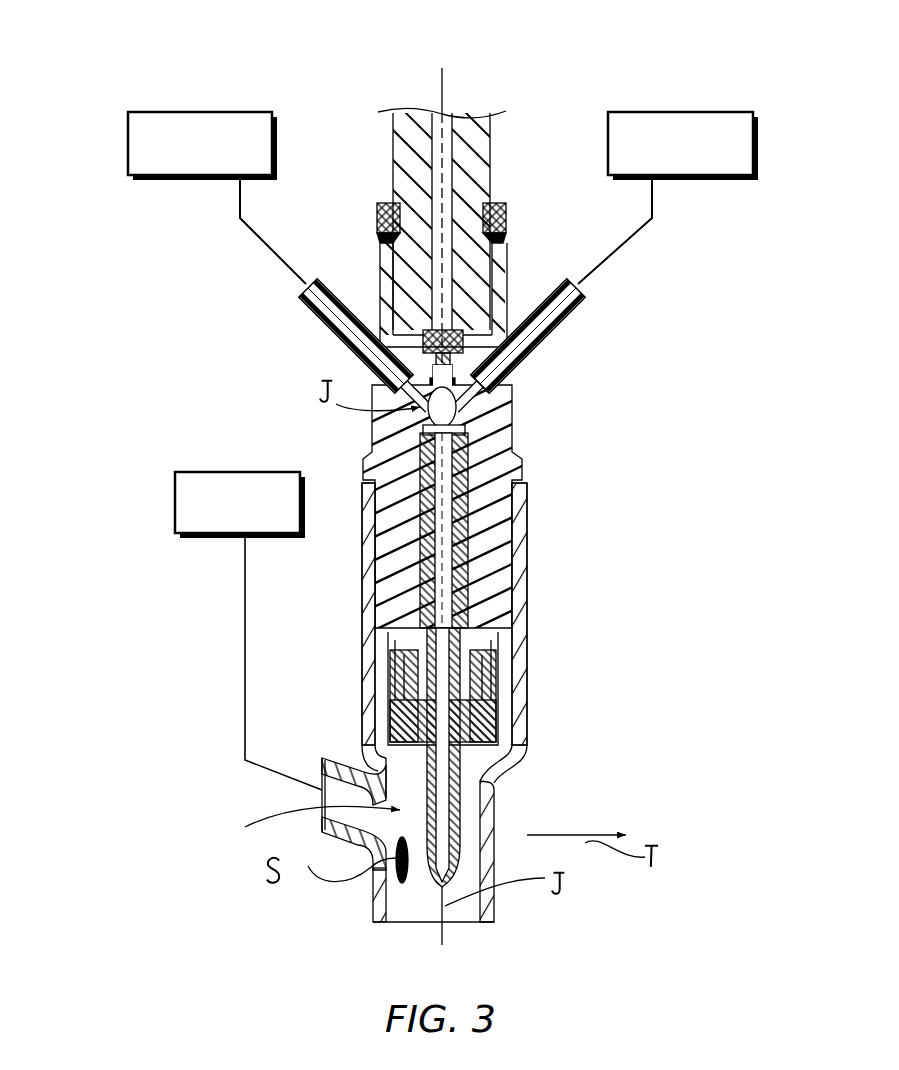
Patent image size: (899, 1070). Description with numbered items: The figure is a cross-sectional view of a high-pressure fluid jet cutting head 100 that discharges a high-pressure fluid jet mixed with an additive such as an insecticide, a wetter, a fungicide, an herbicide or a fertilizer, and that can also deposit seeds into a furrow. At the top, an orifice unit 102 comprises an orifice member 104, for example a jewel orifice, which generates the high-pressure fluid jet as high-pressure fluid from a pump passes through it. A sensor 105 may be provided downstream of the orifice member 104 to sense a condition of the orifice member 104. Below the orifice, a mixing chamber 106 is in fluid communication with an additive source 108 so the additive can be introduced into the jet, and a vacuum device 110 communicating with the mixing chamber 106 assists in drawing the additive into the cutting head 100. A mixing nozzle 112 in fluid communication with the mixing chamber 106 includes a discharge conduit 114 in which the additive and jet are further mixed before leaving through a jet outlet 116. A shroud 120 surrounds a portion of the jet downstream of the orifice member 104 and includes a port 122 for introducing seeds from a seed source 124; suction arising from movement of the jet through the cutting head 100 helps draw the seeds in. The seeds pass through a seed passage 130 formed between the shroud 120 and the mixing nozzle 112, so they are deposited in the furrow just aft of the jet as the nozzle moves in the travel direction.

The high-pressure fluid jet cutting head 100 is at (412, 473).
The orifice unit 102 is at (528, 312).
The orifice member 104 is at (356, 310).
The sensor 105 is at (490, 370).
The mixing chamber 106 is at (408, 538).
The additive source 108 is at (678, 173).
The vacuum device 110 is at (217, 176).
The mixing nozzle 112 is at (530, 652).
The discharge conduit 114 is at (521, 757).
The jet outlet 116 is at (410, 852).
The shroud 120 is at (510, 633).
The port 122 is at (337, 784).
The seed source 124 is at (248, 605).
The seed passage 130 is at (298, 829).